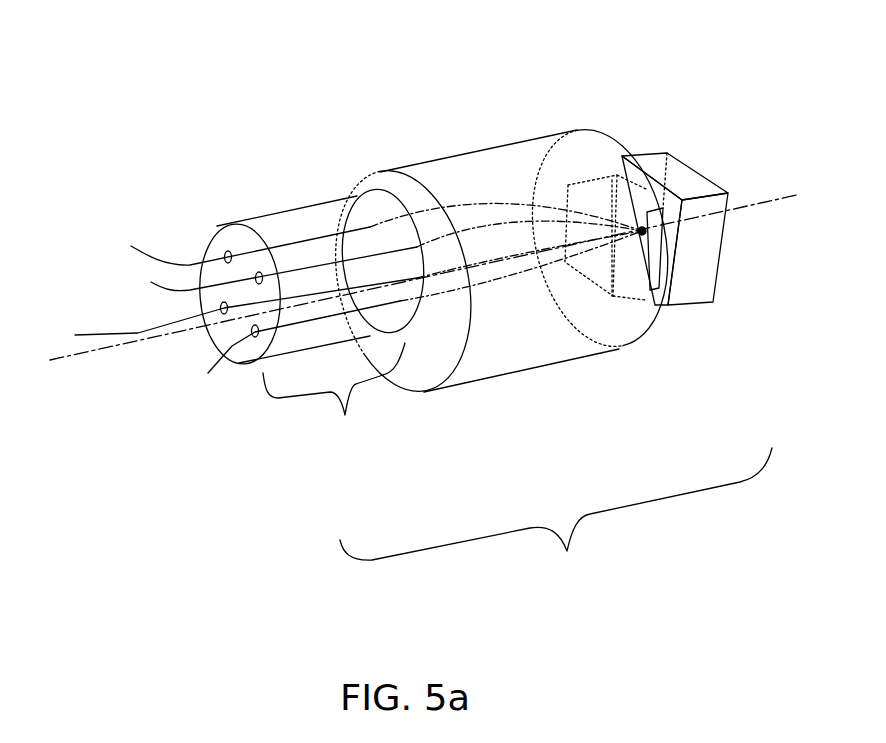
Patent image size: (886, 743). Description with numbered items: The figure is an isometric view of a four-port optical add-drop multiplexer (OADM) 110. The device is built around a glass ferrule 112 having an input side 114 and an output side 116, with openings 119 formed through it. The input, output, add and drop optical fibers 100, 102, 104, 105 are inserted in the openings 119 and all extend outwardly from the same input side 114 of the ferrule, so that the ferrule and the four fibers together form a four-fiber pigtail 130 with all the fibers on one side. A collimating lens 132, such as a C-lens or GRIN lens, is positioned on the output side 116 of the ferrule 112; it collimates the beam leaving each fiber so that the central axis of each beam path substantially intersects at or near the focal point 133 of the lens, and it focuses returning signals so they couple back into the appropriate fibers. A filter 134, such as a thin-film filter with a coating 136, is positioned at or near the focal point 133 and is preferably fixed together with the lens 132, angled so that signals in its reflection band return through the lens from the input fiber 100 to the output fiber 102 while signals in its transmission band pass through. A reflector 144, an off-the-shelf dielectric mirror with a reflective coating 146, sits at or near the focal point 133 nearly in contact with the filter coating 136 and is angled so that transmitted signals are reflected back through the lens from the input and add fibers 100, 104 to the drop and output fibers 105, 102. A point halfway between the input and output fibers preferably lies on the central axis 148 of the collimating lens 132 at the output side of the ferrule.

The input optical fiber 100 is at (223, 348).
The output optical fiber 102 is at (226, 313).
The add optical fiber 104 is at (153, 285).
The drop optical fiber 105 is at (133, 257).
The optical add-drop multiplexer 110 is at (556, 521).
The glass ferrule 112 is at (285, 215).
The input side 114 is at (217, 223).
The output side 116 is at (376, 193).
The opening 119 is at (225, 254).
The 4-fiber pigtail 130 is at (334, 401).
The collimating lens 132 is at (477, 150).
The focal point 133 is at (641, 236).
The filter 134 is at (592, 267).
The coating 136 is at (664, 243).
The reflector 144 is at (648, 148).
The reflective coating 146 is at (670, 203).
The central axis 148 is at (748, 205).